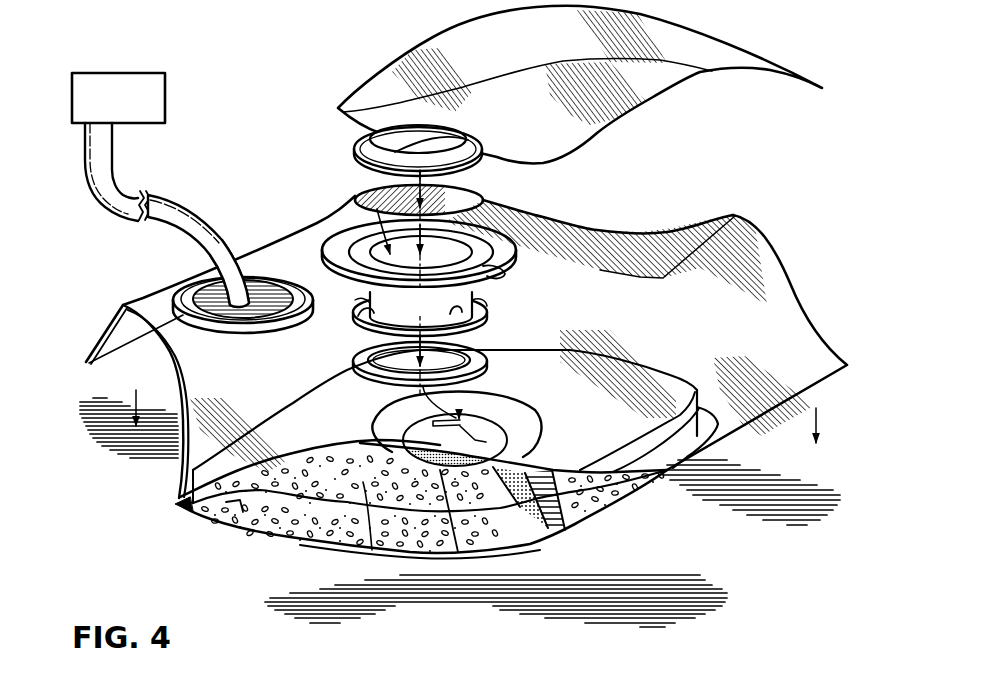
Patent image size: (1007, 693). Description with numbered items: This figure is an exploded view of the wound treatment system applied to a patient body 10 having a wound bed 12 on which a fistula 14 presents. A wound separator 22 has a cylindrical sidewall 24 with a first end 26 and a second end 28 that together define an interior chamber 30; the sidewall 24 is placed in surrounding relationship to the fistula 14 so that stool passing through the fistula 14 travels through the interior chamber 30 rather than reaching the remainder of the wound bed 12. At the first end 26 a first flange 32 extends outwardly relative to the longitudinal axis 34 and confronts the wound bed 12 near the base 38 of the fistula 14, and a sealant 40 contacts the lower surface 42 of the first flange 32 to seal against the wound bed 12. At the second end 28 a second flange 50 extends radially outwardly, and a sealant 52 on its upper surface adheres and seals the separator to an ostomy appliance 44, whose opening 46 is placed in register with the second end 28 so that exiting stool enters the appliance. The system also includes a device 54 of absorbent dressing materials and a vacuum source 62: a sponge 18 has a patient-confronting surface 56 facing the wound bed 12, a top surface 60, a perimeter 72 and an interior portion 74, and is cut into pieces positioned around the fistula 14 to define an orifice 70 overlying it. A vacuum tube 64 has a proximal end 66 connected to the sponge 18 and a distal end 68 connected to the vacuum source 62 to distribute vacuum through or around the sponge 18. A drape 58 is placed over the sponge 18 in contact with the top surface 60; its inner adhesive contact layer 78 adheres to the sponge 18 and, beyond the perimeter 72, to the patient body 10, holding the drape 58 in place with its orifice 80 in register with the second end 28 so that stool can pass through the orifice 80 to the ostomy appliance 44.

The patient body 10 is at (100, 520).
The wound bed 12 is at (541, 392).
The fistula 14 is at (547, 530).
The sponge 18 is at (306, 529).
The wound separator 22 is at (507, 303).
The sidewall 24 is at (458, 314).
The first end 26 is at (355, 312).
The second end 28 is at (500, 262).
The interior chamber 30 is at (358, 196).
The first flange 32 is at (490, 299).
The longitudinal axis 34 is at (352, 364).
The base of the fistula 38 is at (458, 552).
The sealant 40 is at (387, 380).
The lower surface 42 is at (355, 328).
The ostomy appliance 44 is at (638, 136).
The opening 46 is at (473, 137).
The second flange 50 is at (343, 238).
The sealant 52 is at (355, 148).
The device 54 is at (125, 287).
The patient-confronting surface 56 is at (330, 558).
The drape 58 is at (791, 283).
The top surface 60 is at (339, 481).
The vacuum source 62 is at (118, 73).
The vacuum tube 64 is at (209, 212).
The proximal end 66 is at (207, 275).
The distal end 68 is at (113, 130).
The orifice 70 is at (488, 418).
The perimeter 72 is at (234, 510).
The interior portion 74 is at (377, 435).
The adhesive contact layer 78 is at (170, 348).
The orifice 80 is at (438, 222).